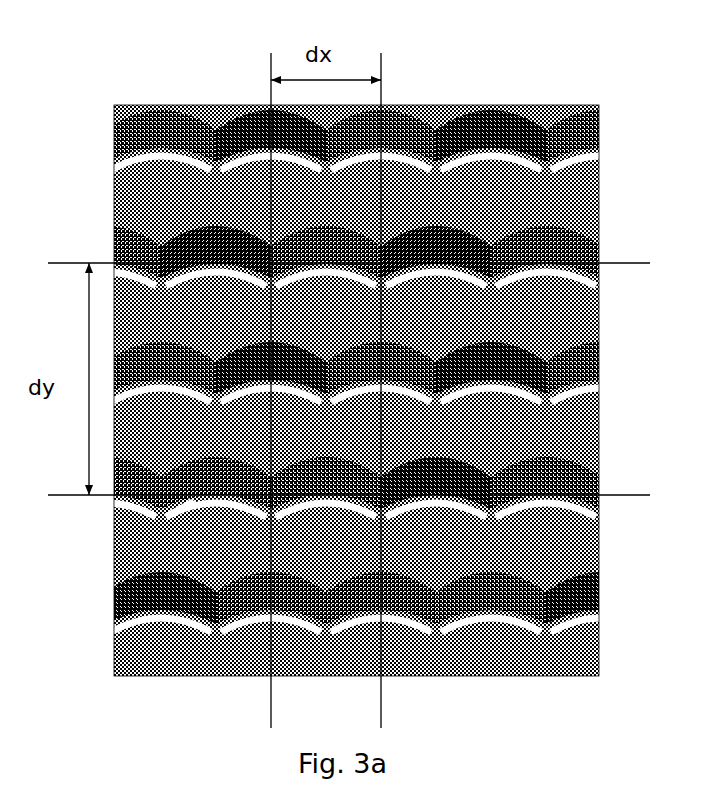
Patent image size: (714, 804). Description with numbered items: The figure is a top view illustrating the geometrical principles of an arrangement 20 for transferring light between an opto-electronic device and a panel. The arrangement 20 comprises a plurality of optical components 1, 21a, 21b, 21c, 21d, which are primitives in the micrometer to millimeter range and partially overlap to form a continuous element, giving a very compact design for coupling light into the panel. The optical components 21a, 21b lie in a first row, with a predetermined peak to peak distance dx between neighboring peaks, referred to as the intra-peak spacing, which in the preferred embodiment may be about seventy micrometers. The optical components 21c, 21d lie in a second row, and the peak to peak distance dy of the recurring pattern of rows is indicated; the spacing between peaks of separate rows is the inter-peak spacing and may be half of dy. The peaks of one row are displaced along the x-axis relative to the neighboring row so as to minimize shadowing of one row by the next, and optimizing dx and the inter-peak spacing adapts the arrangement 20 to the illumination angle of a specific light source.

The arrangement 20 is at (350, 369).
The optical component 1 is at (598, 555).
The optical component 21a is at (360, 672).
The optical component 21b is at (260, 672).
The optical component 21c is at (125, 525).
The optical component 21d is at (190, 538).